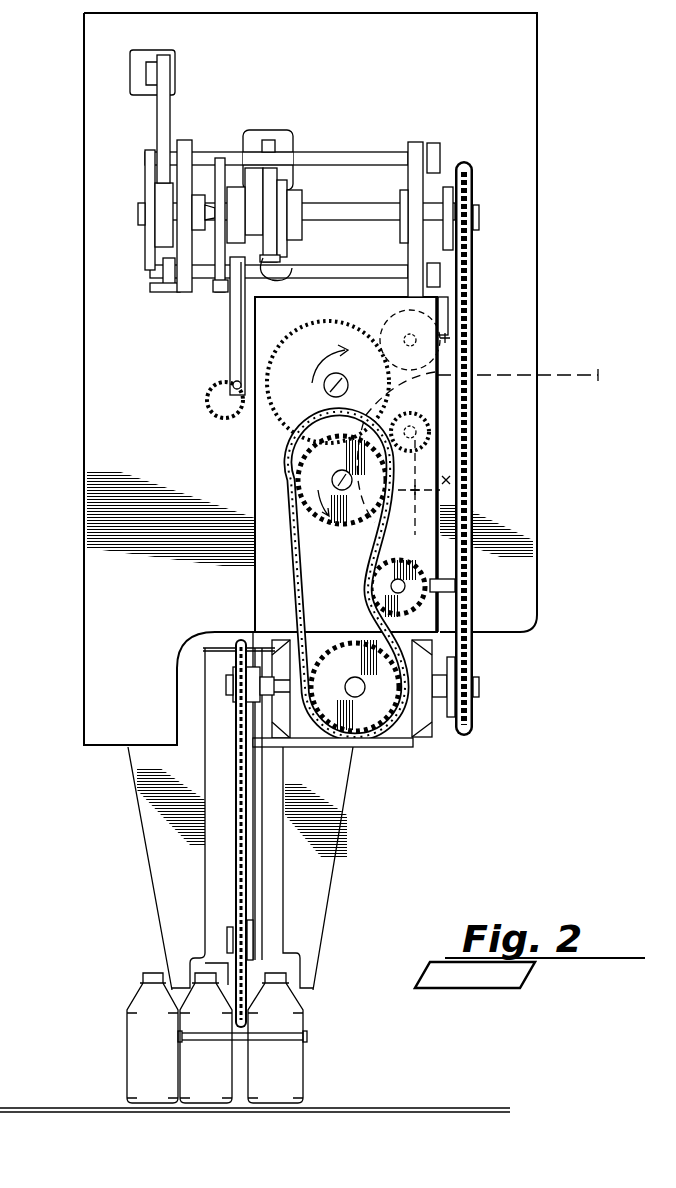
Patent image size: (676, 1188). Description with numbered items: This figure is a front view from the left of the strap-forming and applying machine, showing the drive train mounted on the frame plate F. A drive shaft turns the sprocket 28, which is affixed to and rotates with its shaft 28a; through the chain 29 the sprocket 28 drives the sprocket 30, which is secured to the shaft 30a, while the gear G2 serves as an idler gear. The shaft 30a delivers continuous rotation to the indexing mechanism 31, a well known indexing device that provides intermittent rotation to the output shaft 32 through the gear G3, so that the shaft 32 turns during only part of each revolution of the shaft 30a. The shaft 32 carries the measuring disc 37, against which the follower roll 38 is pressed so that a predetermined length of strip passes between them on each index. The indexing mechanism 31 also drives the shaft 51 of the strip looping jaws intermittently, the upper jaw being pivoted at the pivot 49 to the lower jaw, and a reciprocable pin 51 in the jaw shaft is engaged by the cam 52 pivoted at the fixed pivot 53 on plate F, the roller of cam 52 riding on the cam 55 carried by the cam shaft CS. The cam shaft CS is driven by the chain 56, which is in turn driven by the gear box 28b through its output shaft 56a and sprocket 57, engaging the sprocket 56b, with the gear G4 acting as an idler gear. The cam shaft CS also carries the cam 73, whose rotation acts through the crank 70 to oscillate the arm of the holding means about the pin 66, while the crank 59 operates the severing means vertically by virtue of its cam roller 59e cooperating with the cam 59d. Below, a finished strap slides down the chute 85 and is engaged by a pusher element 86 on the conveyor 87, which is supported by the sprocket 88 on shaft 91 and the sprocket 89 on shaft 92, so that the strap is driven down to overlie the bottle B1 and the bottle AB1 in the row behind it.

The frame plate F is at (92, 182).
The crank 70 is at (163, 118).
The cam 55 is at (223, 158).
The crank 59 is at (270, 142).
The cam 59d is at (298, 205).
The cam roller 59e is at (285, 272).
The cam shaft CS is at (360, 213).
The sprocket 56b is at (476, 194).
The cam 73 is at (147, 237).
The fixed pivot 53 is at (228, 296).
The cam 52 is at (237, 323).
The rotatable shaft / reciprocable pin 51 is at (232, 387).
The pin 66 is at (225, 412).
The pivot 49 is at (328, 382).
The follower roll 38 is at (470, 342).
The output shaft 32 is at (443, 422).
The indexing mechanism 31 is at (262, 448).
The sprocket 30 is at (300, 470).
The chain 56 is at (470, 492).
The disc (measuring roll) 37 is at (477, 498).
The shaft 30a is at (348, 505).
The gear G3 is at (412, 487).
The idler gear G2 is at (440, 582).
The idler gear G4 is at (455, 594).
The chain 29 is at (293, 577).
The shaft 28a is at (356, 672).
The sprocket 28 is at (332, 686).
The gear box 28b is at (430, 745).
The sprocket 89 is at (230, 656).
The shaft 92 is at (226, 688).
The pusher element 86 is at (242, 718).
The sprocket 57 is at (475, 668).
The output shaft 56a is at (482, 688).
The conveyor 87 is at (242, 850).
The chute 85 is at (318, 902).
The shaft 91 is at (228, 940).
The sprocket 88 is at (228, 966).
The bottle AB1 is at (222, 1072).
The bottle B1 is at (288, 1072).